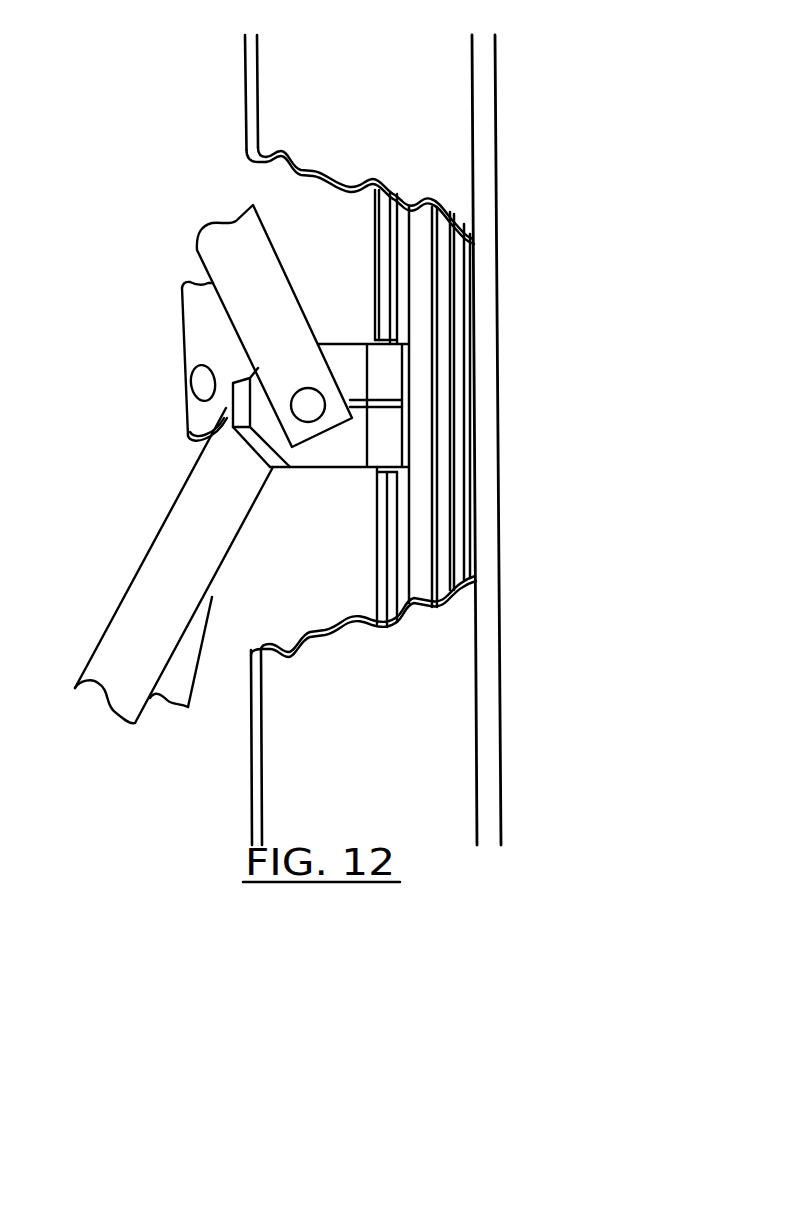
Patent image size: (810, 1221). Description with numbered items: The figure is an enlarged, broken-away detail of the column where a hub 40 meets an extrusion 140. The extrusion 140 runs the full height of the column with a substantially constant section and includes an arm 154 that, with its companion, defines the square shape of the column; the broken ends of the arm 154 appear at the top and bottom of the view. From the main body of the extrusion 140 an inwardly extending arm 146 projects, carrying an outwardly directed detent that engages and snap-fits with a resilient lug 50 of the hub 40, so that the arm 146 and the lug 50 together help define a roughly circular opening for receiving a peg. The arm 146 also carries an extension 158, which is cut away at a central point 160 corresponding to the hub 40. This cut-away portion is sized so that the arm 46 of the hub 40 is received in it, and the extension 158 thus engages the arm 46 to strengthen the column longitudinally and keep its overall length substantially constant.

The hub 40 is at (298, 453).
The arm 46 is at (332, 450).
The lug 50 is at (410, 452).
The extrusion 140 is at (498, 308).
The arm 146 is at (423, 440).
The arm 154 is at (396, 60).
The extension 158 is at (372, 240).
The cut-away point 160 is at (388, 333).